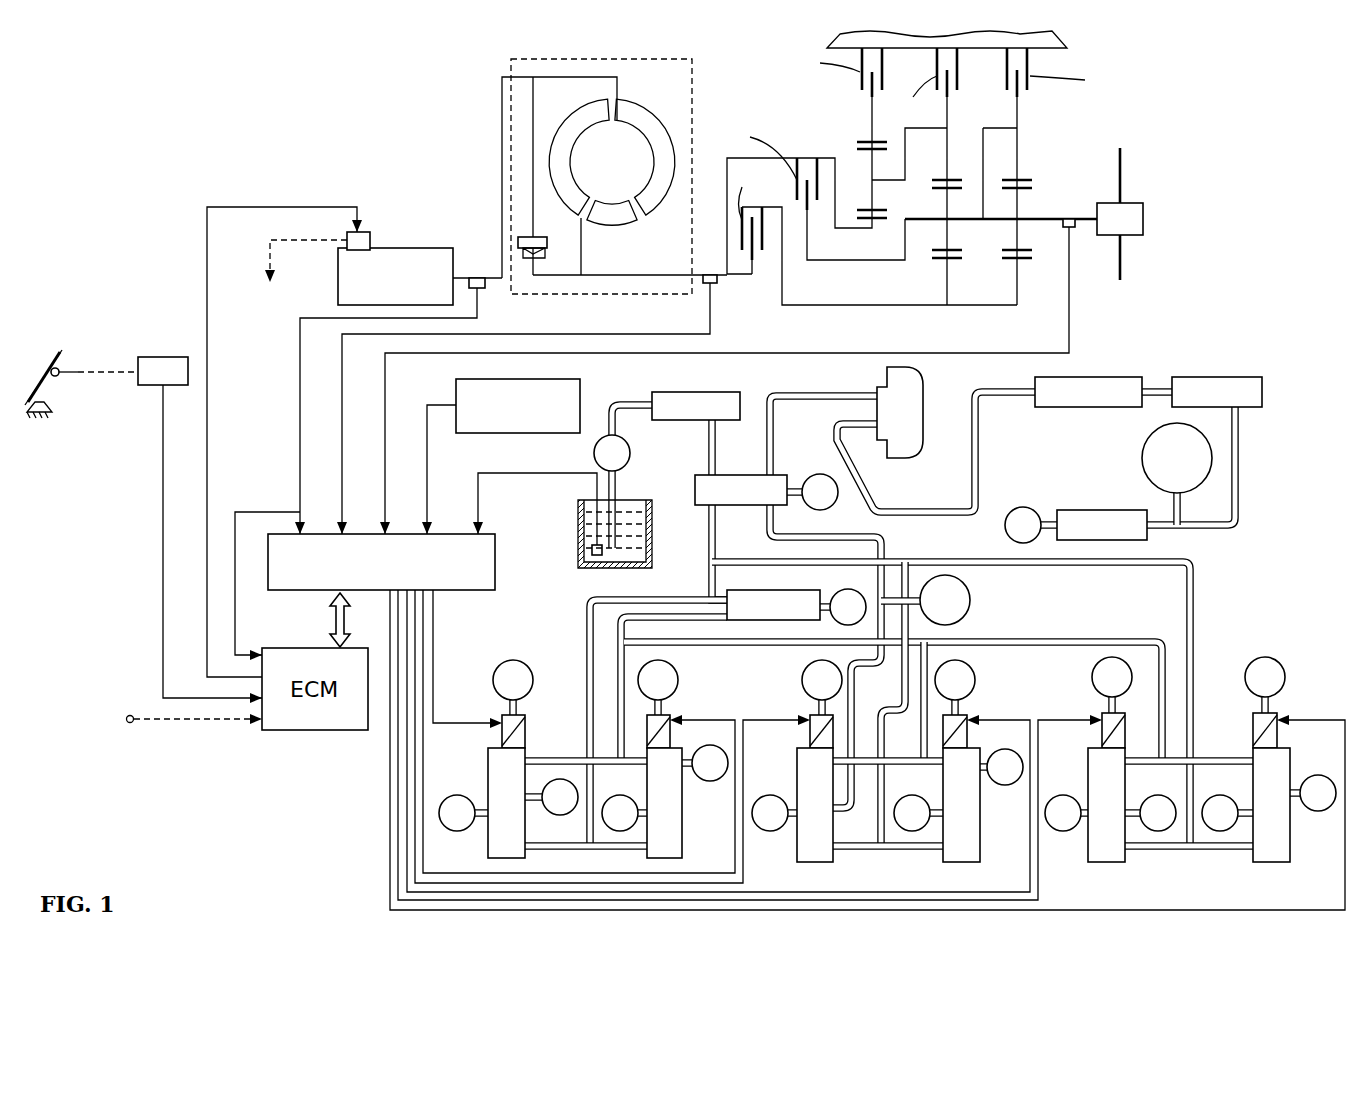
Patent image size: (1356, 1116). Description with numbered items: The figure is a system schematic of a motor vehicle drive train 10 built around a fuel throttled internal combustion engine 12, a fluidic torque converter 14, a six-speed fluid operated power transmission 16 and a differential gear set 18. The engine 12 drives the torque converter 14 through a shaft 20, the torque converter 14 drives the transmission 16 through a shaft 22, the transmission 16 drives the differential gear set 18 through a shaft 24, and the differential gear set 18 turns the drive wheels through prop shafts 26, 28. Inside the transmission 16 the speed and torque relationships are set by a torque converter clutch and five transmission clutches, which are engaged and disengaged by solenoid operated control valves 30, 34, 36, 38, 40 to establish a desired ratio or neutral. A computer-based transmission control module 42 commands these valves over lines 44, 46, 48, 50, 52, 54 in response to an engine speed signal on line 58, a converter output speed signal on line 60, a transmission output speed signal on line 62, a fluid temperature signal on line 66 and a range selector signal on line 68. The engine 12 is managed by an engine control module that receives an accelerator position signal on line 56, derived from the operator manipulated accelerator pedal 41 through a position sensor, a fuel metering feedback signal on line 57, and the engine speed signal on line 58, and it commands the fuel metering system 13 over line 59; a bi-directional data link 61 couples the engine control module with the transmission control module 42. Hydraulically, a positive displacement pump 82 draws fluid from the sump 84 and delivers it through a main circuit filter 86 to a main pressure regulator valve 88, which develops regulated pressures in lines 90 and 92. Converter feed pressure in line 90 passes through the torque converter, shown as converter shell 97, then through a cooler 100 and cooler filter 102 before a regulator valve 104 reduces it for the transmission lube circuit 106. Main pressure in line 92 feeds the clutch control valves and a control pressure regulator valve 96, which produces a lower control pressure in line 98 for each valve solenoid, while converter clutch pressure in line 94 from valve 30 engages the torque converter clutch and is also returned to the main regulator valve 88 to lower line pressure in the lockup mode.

The motor vehicle drive train 10 is at (340, 162).
The internal combustion engine 12 is at (400, 248).
The fuel metering system 13 is at (360, 232).
The fluidic torque converter 14 is at (546, 60).
The fluid operated power transmission 16 is at (792, 132).
The differential gear set 18 is at (1143, 220).
The shaft 20 is at (500, 260).
The shaft 22 is at (712, 283).
The shaft 24 is at (1066, 217).
The prop shaft 26 is at (1120, 170).
The prop shaft 28 is at (1120, 257).
The solenoid operated control valve 30 is at (815, 855).
The solenoid operated control valve 34 is at (677, 812).
The solenoid operated control valve 36 is at (957, 855).
The solenoid operated control valve 38 is at (1113, 855).
The solenoid operated control valve 40 is at (1268, 855).
The accelerator pedal 41 is at (44, 368).
The transmission control module 42 is at (448, 592).
The line 44 is at (414, 832).
The line 46 is at (460, 722).
The line 48 is at (422, 860).
The line 50 is at (406, 803).
The line 52 is at (397, 772).
The line 54 is at (389, 745).
The line 56 is at (163, 412).
The line 57 is at (268, 252).
The line 58 is at (298, 417).
The line 59 is at (207, 243).
The line 60 is at (340, 392).
The bi-directional data link 61 is at (333, 620).
The line 62 is at (383, 368).
The line 66 is at (515, 470).
The line 68 is at (425, 425).
The positive displacement pump 82 is at (594, 452).
The sump 84 is at (645, 502).
The main circuit filter 86 is at (655, 392).
The main pressure regulator valve 88 is at (698, 504).
The line 90 is at (790, 393).
The line 92 is at (588, 626).
The line 94 is at (884, 540).
The control pressure regulator valve 96 is at (765, 622).
The converter shell 97 is at (893, 383).
The line 98 is at (620, 692).
The cooler 100 is at (1135, 377).
The cooler filter 102 is at (1257, 377).
The regulator valve 104 is at (1093, 510).
The transmission lube circuit 106 is at (1158, 440).